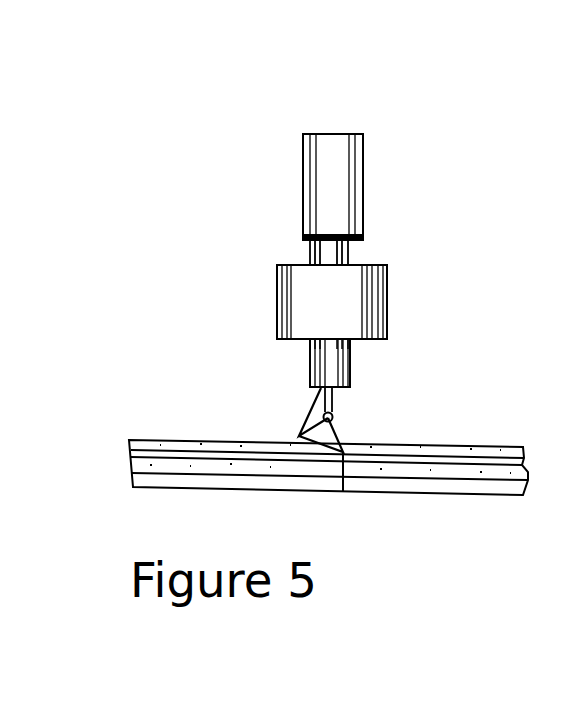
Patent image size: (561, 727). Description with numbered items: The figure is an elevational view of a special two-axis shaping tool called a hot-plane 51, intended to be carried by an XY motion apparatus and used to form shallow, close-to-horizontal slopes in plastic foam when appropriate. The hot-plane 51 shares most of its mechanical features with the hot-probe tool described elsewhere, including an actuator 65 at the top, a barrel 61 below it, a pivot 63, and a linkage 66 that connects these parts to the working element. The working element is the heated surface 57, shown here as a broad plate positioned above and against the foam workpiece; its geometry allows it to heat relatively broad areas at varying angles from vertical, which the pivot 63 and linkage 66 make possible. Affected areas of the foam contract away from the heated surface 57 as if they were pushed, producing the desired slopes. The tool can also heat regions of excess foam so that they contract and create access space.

The hot-plane 51 is at (398, 108).
The actuator 65 is at (330, 177).
The barrel 61 is at (325, 252).
The pivot 63 is at (337, 420).
The linkage 66 is at (305, 410).
The heated surface 57 is at (323, 447).